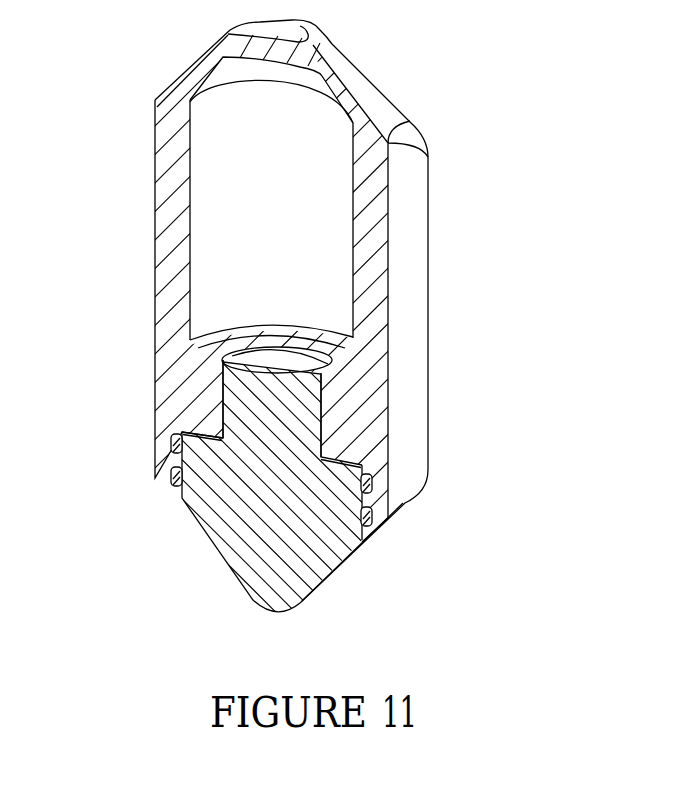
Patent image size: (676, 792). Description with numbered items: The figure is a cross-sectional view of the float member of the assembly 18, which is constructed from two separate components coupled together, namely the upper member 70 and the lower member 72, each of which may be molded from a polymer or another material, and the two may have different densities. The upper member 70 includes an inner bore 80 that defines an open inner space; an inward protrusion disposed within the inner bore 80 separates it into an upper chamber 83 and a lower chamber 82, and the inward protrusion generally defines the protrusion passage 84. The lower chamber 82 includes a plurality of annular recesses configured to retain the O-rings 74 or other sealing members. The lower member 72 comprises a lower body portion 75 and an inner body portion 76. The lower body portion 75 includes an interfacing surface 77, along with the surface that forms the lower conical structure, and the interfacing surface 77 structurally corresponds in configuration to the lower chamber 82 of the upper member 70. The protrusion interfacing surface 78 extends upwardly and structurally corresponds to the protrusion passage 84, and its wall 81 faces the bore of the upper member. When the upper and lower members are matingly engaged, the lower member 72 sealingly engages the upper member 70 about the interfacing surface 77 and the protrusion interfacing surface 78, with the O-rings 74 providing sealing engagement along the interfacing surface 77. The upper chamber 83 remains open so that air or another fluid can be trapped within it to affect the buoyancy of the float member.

The sensor assembly 18 is at (511, 44).
The upper member 70 is at (112, 253).
The lower member 72 is at (183, 560).
The O-rings 74 is at (172, 483).
The lower body portion 75 is at (338, 568).
The inner body portion 76 is at (338, 488).
The interfacing surface 77 is at (362, 530).
The protrusion interfacing surface 78 is at (321, 399).
The inner bore 80 is at (208, 165).
The bore wall 81 is at (338, 434).
The lower chamber 82 is at (372, 483).
The upper chamber 83 is at (208, 217).
The protrusion passage 84 is at (204, 390).